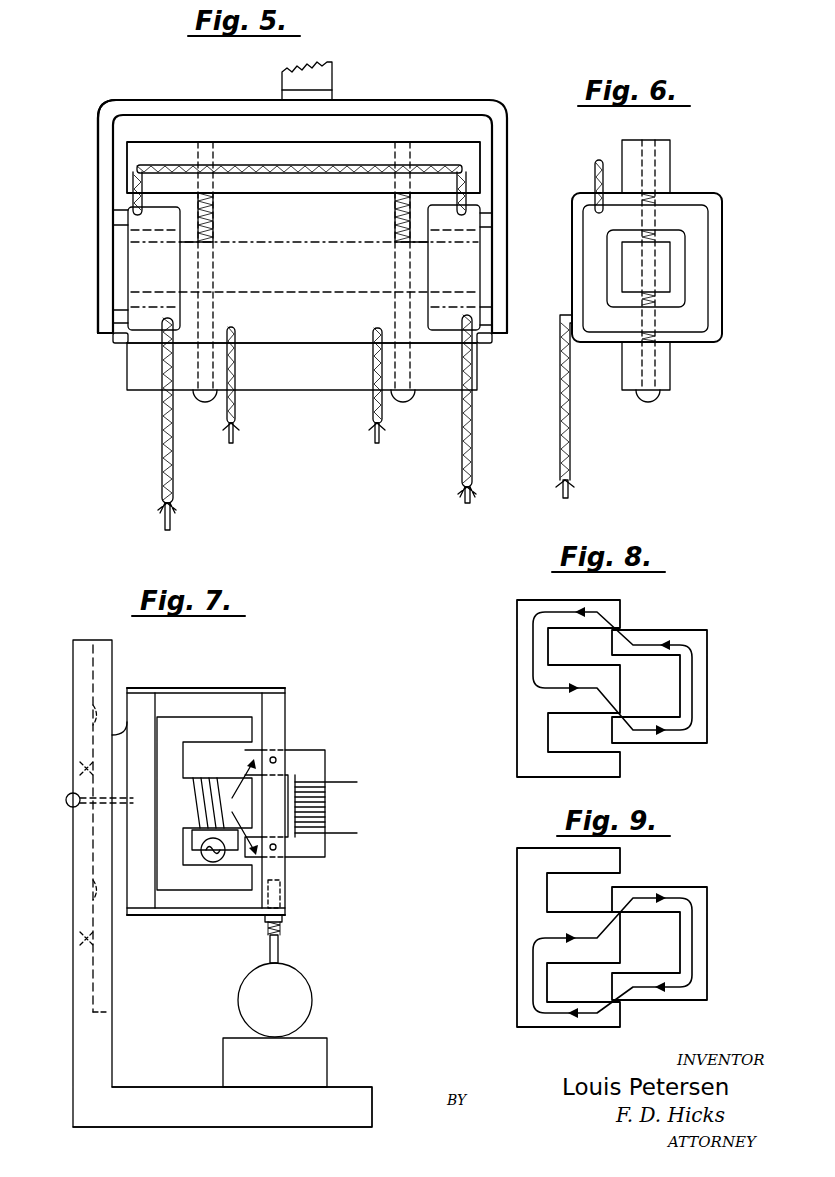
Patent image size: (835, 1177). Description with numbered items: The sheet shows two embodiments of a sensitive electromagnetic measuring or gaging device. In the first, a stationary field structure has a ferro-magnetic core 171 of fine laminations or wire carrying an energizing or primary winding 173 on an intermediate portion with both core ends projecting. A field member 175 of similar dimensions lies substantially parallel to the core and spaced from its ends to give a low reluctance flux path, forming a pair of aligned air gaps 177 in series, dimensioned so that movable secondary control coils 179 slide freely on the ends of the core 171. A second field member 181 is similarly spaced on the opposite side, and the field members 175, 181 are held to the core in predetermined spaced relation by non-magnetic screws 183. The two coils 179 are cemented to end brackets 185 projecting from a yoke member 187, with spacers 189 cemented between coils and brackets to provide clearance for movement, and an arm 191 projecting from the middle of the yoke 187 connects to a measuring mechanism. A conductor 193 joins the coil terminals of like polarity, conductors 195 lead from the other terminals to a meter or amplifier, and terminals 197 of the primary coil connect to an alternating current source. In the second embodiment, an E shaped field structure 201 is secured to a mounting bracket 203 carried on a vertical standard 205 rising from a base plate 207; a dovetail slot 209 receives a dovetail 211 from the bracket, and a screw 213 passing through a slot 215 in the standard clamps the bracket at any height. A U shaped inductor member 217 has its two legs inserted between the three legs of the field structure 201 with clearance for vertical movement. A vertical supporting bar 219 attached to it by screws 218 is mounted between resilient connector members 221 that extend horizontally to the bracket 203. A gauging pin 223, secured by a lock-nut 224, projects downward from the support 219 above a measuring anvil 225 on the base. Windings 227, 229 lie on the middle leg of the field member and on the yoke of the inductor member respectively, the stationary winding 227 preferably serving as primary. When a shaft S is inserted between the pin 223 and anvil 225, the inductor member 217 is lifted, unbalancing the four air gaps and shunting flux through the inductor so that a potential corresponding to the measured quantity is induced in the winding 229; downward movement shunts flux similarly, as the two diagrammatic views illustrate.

In FIG. 5, the ferro-magnetic core 171 is at (128, 270).
In FIG. 6, the ferro-magnetic core 171 is at (670, 272).
In FIG. 5, the energizing or primary winding 173 is at (287, 330).
In FIG. 6, the energizing or primary winding 173 is at (717, 224).
In FIG. 5, the field member 175 is at (140, 155).
In FIG. 6, the field member 175 is at (665, 170).
In FIG. 5, the air gaps 177 is at (130, 345).
In FIG. 5, the movable secondary control coils 179 is at (150, 263).
In FIG. 6, the movable secondary control coils 179 is at (700, 300).
In FIG. 5, the second field member 181 is at (150, 380).
In FIG. 6, the second field member 181 is at (665, 360).
In FIG. 5, the screws 183 is at (205, 402).
In FIG. 6, the screws 183 is at (655, 400).
In FIG. 5, the end brackets 185 is at (106, 200).
In FIG. 5, the yoke member 187 is at (375, 101).
In FIG. 5, the spacers 189 is at (487, 212).
In FIG. 5, the arm 191 is at (332, 77).
In FIG. 5, the conductor 193 is at (300, 162).
In FIG. 6, the conductor 193 is at (596, 168).
In FIG. 5, the conductors 195 is at (160, 460).
In FIG. 6, the conductors 195 is at (572, 420).
In FIG. 5, the terminals 197 is at (242, 412).
In FIG. 7, the field structure 201 is at (170, 727).
In FIG. 8, the field structure 201 is at (515, 704).
In FIG. 9, the field structure 201 is at (525, 912).
In FIG. 7, the mounting bracket 203 is at (148, 710).
In FIG. 7, the vertical standard 205 is at (105, 1035).
In FIG. 7, the base plate 207 is at (188, 1092).
In FIG. 7, the dovetail slot 209 is at (93, 722).
In FIG. 7, the dovetail 211 is at (93, 885).
In FIG. 7, the screw 213 is at (70, 806).
In FIG. 7, the slot 215 is at (78, 768).
In FIG. 7, the U shaped inductor member 217 is at (313, 763).
In FIG. 8, the U shaped inductor member 217 is at (700, 682).
In FIG. 9, the U shaped inductor member 217 is at (700, 943).
In FIG. 7, the screws 218 is at (276, 758).
In FIG. 7, the vertical supporting bar 219 is at (280, 715).
In FIG. 7, the resilient connector members 221 is at (200, 690).
In FIG. 7, the gauging pin 223 is at (280, 947).
In FIG. 7, the lock-nut 224 is at (284, 918).
In FIG. 7, the measuring anvil 225 is at (320, 1060).
In FIG. 7, the winding 227 is at (215, 807).
In FIG. 7, the winding 229 is at (332, 822).
In FIG. 7, the shaft S is at (300, 990).